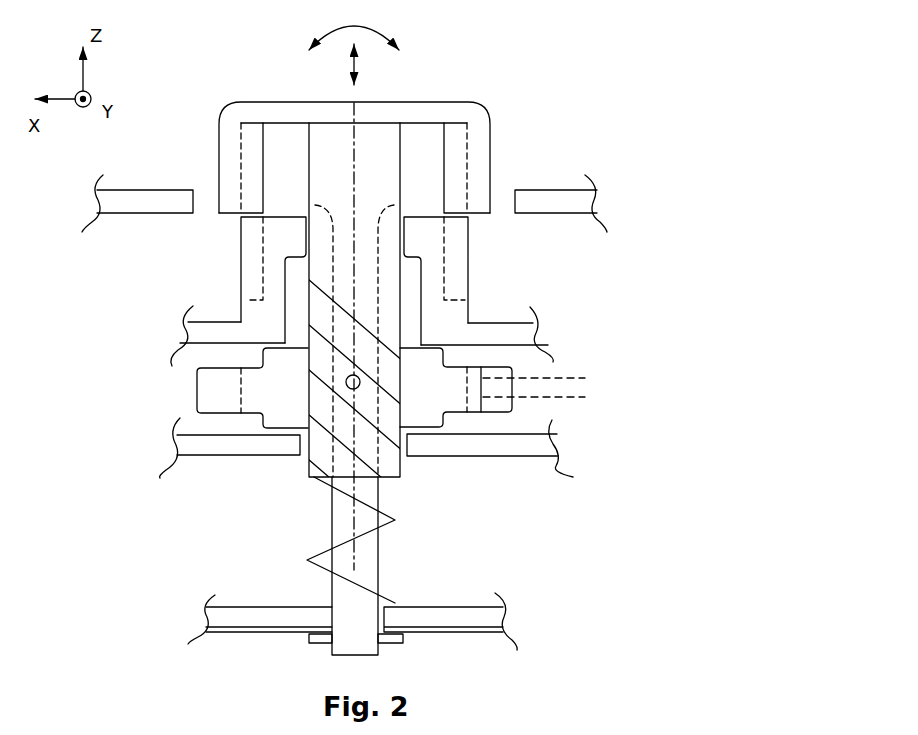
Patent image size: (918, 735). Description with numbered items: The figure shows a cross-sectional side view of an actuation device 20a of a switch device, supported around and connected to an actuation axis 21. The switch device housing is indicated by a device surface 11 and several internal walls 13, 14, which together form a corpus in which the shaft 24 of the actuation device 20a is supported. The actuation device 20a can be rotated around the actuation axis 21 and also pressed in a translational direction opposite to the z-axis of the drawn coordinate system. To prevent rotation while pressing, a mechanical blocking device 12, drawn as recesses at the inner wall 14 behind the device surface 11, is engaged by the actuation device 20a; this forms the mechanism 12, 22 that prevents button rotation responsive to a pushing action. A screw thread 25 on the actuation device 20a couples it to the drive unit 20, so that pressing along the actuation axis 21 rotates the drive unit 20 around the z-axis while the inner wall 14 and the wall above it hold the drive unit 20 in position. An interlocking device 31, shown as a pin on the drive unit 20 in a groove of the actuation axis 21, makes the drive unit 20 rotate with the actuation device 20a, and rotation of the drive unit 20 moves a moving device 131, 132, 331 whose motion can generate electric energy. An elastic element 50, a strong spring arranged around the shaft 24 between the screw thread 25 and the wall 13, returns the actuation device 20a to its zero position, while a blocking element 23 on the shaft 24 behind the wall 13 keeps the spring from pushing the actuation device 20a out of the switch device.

The actuation device 20a is at (472, 110).
The actuation axis 21 is at (354, 170).
The mechanism to prevent button rotation 22 is at (455, 182).
The device surface 11 is at (574, 197).
The mechanical blocking device 12 is at (465, 263).
The screw thread 25 is at (389, 343).
The inner wall 14 is at (519, 335).
The drive unit 20 is at (434, 383).
The moving device 131 is at (624, 392).
The guide element 132 is at (624, 392).
The guide element 331 is at (554, 388).
The interlocking device 31 is at (369, 394).
The shaft 24 is at (311, 523).
The elastic element 50 is at (392, 522).
The inner wall 13 is at (452, 620).
The blocking element 23 is at (411, 641).